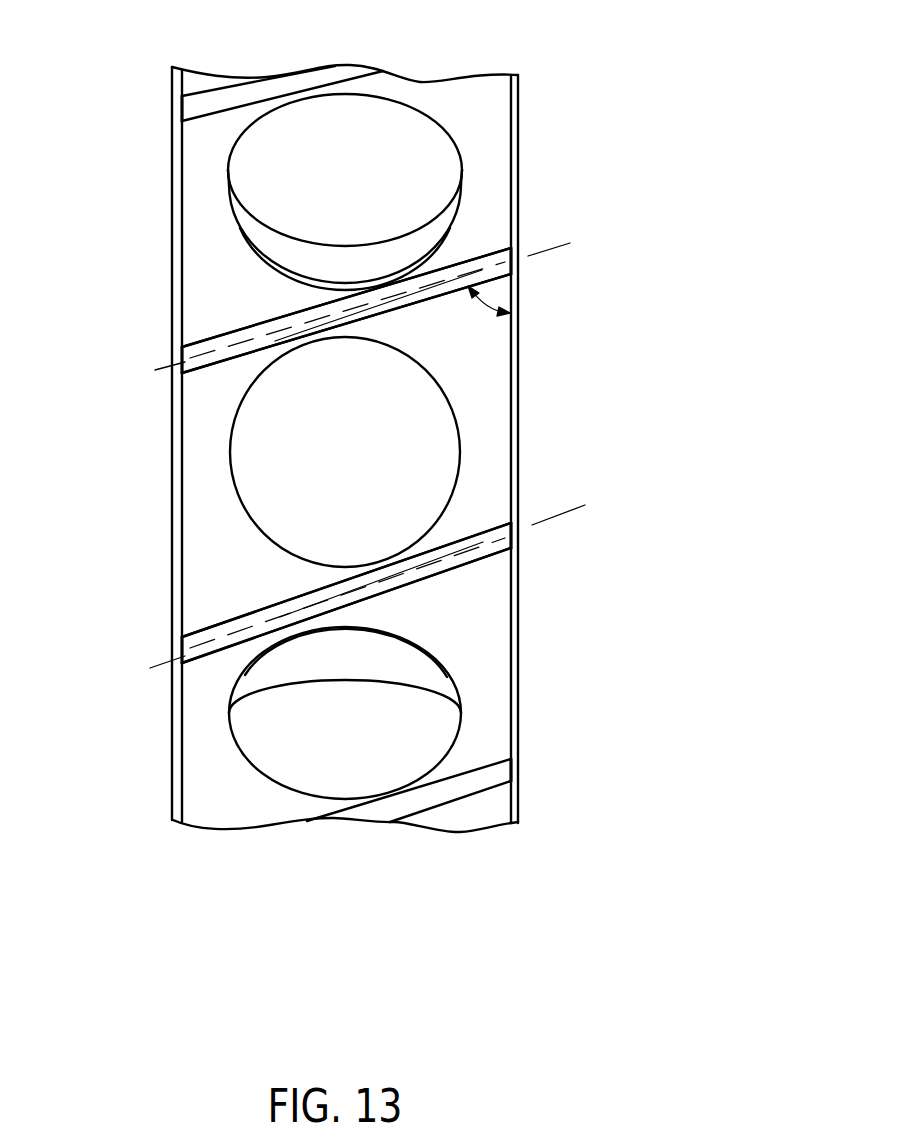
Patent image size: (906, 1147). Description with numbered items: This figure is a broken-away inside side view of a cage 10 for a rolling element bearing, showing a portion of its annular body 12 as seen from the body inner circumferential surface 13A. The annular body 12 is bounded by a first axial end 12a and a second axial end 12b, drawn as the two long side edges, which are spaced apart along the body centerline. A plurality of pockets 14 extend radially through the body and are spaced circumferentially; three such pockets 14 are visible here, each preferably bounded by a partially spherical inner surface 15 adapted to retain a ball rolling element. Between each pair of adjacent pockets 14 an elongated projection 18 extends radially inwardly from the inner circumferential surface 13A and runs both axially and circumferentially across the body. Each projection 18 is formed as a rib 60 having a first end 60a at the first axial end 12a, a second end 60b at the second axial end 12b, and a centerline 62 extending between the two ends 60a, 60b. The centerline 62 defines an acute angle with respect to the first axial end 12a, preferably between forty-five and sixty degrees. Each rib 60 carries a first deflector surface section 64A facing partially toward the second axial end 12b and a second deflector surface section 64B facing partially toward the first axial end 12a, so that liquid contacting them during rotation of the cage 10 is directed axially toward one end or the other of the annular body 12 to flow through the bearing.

The cage 10 is at (722, 327).
The annular body 12 is at (316, 448).
The first axial end 12a is at (520, 135).
The second axial end 12b is at (172, 157).
The inner circumferential surface 13A is at (242, 579).
The pocket 14 is at (358, 113).
The partially spherical inner surface 15 is at (331, 252).
The elongated projection 18 is at (490, 218).
The rib 60 is at (352, 446).
The first end 60a is at (513, 250).
The second end 60b is at (182, 106).
The centerline 62 is at (563, 245).
The first deflector surface section 64A is at (247, 330).
The second deflector surface section 64B is at (425, 307).